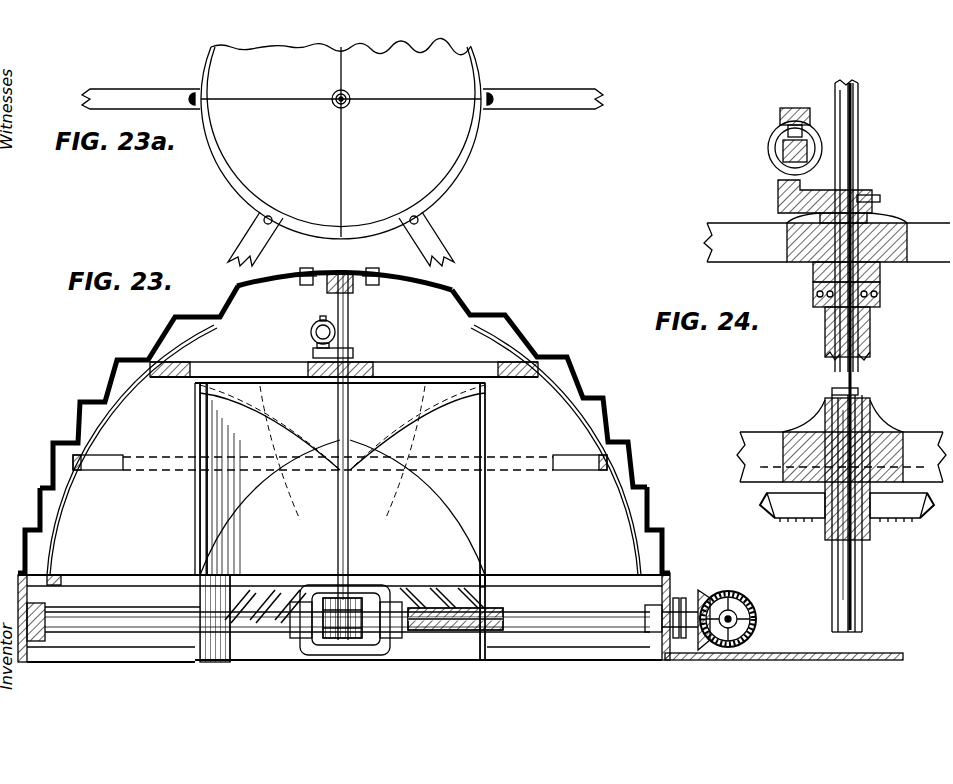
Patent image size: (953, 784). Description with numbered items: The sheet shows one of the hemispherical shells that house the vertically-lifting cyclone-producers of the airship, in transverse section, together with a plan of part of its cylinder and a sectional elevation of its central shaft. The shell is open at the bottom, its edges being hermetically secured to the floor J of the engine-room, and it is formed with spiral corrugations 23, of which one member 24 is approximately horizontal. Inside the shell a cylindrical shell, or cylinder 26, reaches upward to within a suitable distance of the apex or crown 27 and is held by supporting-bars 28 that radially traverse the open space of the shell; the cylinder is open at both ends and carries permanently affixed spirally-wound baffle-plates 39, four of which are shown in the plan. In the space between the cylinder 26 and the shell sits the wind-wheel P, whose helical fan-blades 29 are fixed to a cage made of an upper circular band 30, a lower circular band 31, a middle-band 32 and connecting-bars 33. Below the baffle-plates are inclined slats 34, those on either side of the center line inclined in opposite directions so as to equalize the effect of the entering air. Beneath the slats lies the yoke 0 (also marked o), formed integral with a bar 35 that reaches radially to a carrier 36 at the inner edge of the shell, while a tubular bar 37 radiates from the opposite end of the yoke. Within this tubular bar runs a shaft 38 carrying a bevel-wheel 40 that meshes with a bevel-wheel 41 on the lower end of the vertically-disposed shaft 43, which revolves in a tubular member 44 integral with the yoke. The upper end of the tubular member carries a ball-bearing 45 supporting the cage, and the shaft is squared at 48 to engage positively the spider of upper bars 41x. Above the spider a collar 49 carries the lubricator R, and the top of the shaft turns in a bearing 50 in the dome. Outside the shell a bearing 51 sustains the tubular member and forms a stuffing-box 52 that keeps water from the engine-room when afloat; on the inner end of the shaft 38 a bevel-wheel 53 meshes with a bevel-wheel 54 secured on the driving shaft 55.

In FIG. 23, the spiral corrugations 23 is at (73, 424).
In FIG. 23, the horizontal member of the spiral corrugations 24 is at (49, 483).
In FIG. 23a, the cylindrical shell (cylinder) 26 is at (476, 165).
In FIG. 23, the cylindrical shell (cylinder) 26 is at (314, 472).
In FIG. 23, the apex or crown (dome) 27 is at (409, 289).
In FIG. 23a, the supporting-bars 28 is at (242, 232).
In FIG. 23, the supporting-bars 28 is at (121, 662).
In FIG. 23, the helical fan-blades 29 is at (344, 548).
In FIG. 23, the upper circular band 30 is at (168, 359).
In FIG. 23, the lower circular band 31 is at (52, 590).
In FIG. 23, the middle-band 32 is at (91, 477).
In FIG. 23, the connecting-bars 33 is at (96, 429).
In FIG. 23, the inclined slats 34 is at (262, 620).
In FIG. 23, the bar 35 is at (218, 632).
In FIG. 23, the carrier 36 is at (41, 647).
In FIG. 23, the tubular bar 37 is at (481, 634).
In FIG. 23, the shaft 38 is at (442, 632).
In FIG. 23a, the spirally-wound baffle-plates 39 is at (340, 117).
In FIG. 23, the spirally-wound baffle-plates 39 is at (342, 480).
In FIG. 23, the bevel-wheel 40 is at (352, 645).
In FIG. 23, the bevel-wheel 41 is at (345, 602).
In FIG. 24, the bevel-wheel 41 is at (918, 512).
In FIG. 23, the upper bars of the cage (spider) 41x is at (233, 371).
In FIG. 24, the upper bars of the cage (spider) 41x is at (827, 242).
In FIG. 23a, the vertically-disposed shaft 43 is at (344, 96).
In FIG. 23, the vertically-disposed shaft 43 is at (352, 319).
In FIG. 24, the vertically-disposed shaft 43 is at (866, 154).
In FIG. 23a, the tubular member 44 is at (350, 113).
In FIG. 23, the tubular member 44 is at (355, 521).
In FIG. 24, the tubular member 44 is at (877, 337).
In FIG. 24, the ball-bearing 45 is at (880, 293).
In FIG. 24, the squared portion of the shaft 48 is at (863, 229).
In FIG. 23, the collar 49 is at (347, 353).
In FIG. 24, the collar 49 is at (875, 185).
In FIG. 23, the bearing 50 is at (328, 290).
In FIG. 23, the bearing 51 is at (659, 642).
In FIG. 23, the stuffing-box 52 is at (684, 644).
In FIG. 23, the bevel-wheel 53 is at (713, 642).
In FIG. 23, the bevel-wheel 54 is at (758, 622).
In FIG. 23, the shaft 55 is at (739, 611).
In FIG. 23, the lubricator R is at (307, 332).
In FIG. 24, the lubricator R is at (780, 141).
In FIG. 23, the wind-wheel P is at (135, 424).
In FIG. 23, the yoke 0 is at (380, 642).
In FIG. 24, the yoke o is at (746, 458).
In FIG. 23, the floor J is at (841, 666).